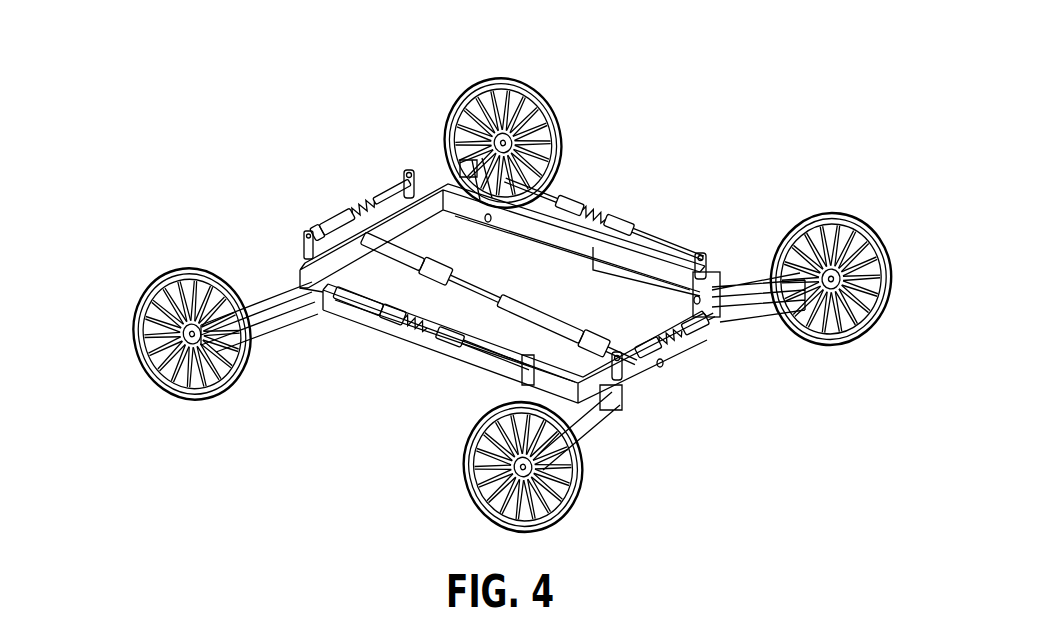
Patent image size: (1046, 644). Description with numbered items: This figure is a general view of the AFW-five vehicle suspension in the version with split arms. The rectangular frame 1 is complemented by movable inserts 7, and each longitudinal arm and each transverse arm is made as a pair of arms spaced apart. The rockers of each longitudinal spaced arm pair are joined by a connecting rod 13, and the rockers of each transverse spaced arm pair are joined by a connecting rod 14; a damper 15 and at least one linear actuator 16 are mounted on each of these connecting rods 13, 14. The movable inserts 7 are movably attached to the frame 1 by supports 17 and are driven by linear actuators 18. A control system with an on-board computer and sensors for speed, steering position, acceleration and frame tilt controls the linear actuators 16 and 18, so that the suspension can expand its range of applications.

The rectangular frame 1 is at (640, 277).
The movable inserts 7 is at (432, 210).
The connecting rod 13 is at (553, 196).
The connecting rod 14 is at (403, 176).
The damper 15 is at (308, 253).
The linear actuator 16 is at (620, 345).
The supports 17 is at (613, 340).
The linear actuators 18 is at (587, 334).